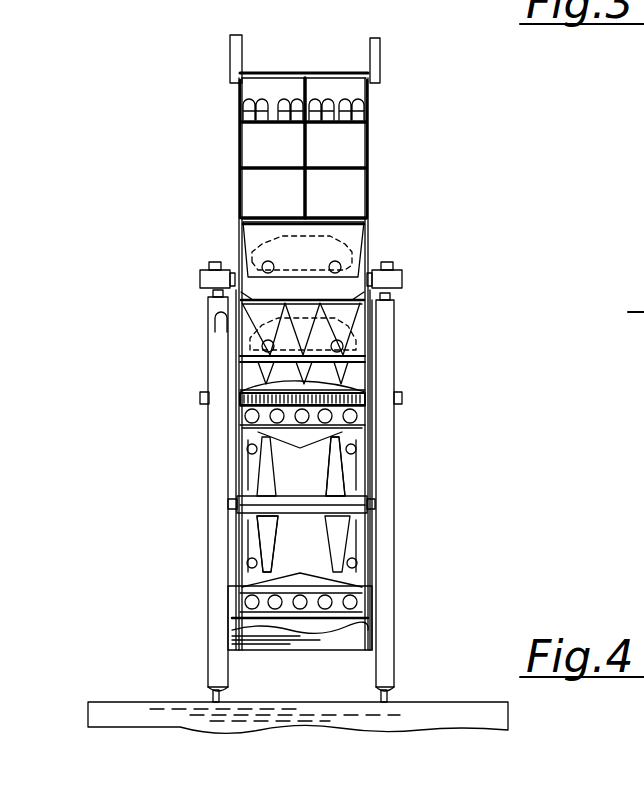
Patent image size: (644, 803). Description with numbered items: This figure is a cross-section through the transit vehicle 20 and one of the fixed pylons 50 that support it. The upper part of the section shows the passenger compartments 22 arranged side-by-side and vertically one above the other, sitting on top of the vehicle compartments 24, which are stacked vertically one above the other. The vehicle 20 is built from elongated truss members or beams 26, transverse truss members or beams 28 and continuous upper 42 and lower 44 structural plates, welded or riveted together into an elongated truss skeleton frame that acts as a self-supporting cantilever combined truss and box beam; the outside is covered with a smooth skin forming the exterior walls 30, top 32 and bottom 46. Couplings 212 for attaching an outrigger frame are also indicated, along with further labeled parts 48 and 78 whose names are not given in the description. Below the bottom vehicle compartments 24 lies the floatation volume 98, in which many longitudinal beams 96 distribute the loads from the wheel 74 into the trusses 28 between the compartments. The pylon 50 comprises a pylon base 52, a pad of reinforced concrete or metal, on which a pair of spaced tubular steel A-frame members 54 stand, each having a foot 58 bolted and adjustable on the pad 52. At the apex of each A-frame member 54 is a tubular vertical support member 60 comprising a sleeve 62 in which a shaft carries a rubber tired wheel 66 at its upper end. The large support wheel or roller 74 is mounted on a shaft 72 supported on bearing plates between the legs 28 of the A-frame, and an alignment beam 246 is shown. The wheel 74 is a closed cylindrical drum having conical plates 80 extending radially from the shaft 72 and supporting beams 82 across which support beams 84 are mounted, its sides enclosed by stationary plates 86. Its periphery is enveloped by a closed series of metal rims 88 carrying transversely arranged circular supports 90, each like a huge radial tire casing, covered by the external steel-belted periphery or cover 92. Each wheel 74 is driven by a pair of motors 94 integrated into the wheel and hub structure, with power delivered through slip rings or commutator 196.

The transit vehicle 20 is at (372, 118).
The passenger compartments 22 is at (260, 80).
The vehicle compartments 24 is at (345, 250).
The elongated truss members or beams 26 is at (238, 140).
The transverse truss members or beams 28 is at (340, 160).
The exterior walls 30 is at (370, 185).
The top 32 is at (245, 72).
The upper structural plate 42 is at (300, 73).
The lower structural plate 44 is at (240, 378).
The bottom 46 is at (365, 433).
The bumper mount 48 is at (400, 270).
The fixed pylon 50 is at (400, 557).
The pylon base 52 is at (440, 702).
The A-frame member 54 is at (392, 628).
The foot 58 is at (390, 695).
The tubular vertical support member 60 is at (205, 303).
The sleeve 62 is at (395, 325).
The rubber tired wheel 66 is at (200, 278).
The shaft 72 is at (322, 505).
The support wheel or roller 74 is at (230, 626).
The guide frame 78 is at (208, 572).
The conical plates 80 is at (366, 480).
The supporting beams 82 is at (366, 445).
The support beams 84 is at (318, 568).
The stationary plates 86 is at (236, 545).
The metal rims 88 is at (240, 440).
The circular supports 90 is at (235, 425).
The external steel-belted periphery or cover 92 is at (228, 400).
The motors 94 is at (245, 448).
The longitudinal beams 96 is at (235, 374).
The floatation volume 98 is at (395, 385).
The slip rings or commutator 196 is at (395, 528).
The couplings 212 is at (383, 60).
The alignment beam 246 is at (395, 315).